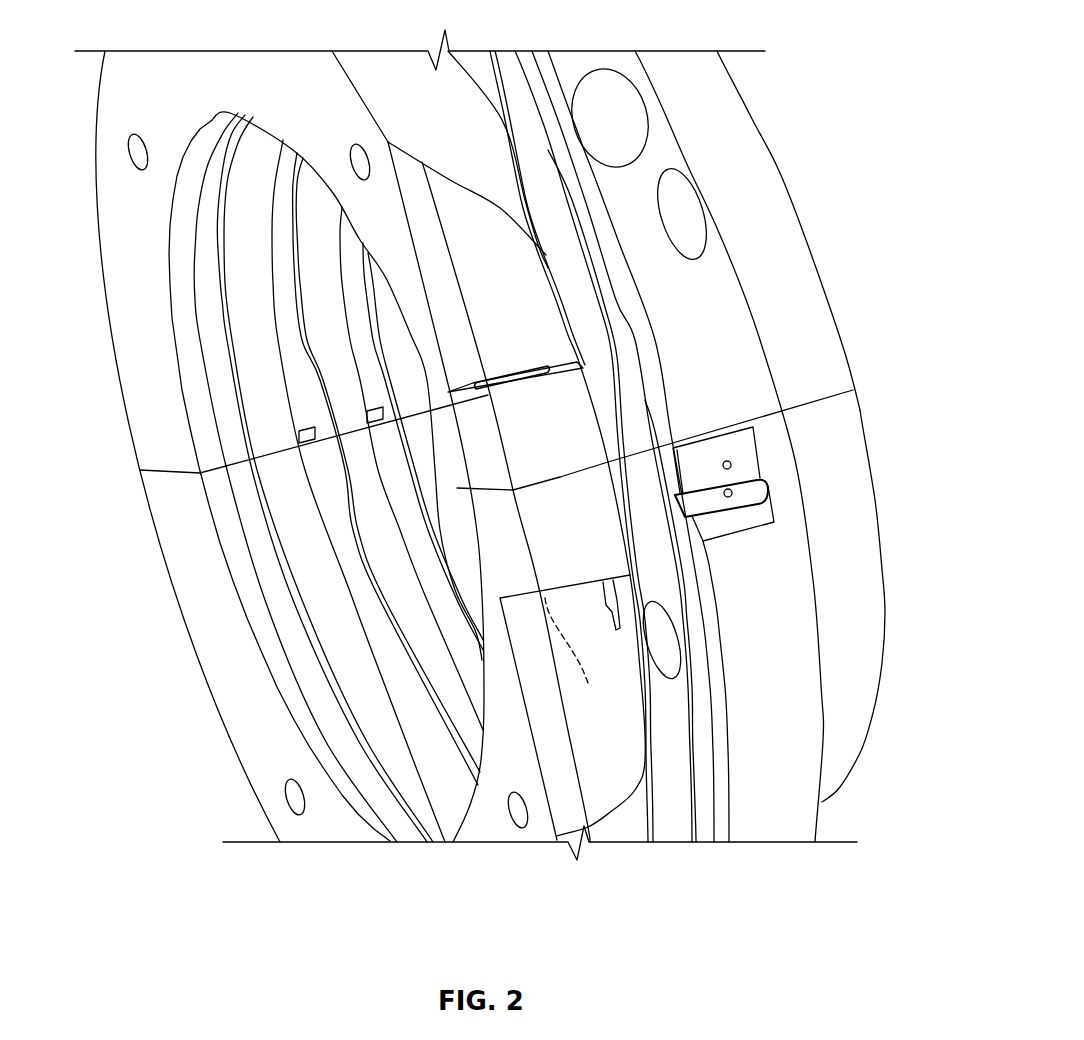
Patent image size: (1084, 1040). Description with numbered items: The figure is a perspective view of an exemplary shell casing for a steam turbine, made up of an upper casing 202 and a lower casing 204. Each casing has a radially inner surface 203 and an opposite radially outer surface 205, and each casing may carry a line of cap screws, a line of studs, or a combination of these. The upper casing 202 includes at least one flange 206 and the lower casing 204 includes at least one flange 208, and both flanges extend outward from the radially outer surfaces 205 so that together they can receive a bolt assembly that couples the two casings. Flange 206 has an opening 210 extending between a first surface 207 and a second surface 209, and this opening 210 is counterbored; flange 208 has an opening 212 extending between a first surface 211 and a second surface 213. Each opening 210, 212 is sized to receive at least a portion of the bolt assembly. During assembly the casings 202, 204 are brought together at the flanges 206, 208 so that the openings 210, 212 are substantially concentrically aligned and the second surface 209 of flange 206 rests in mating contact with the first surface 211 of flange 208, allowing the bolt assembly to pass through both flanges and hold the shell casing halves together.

The upper casing 202 is at (835, 255).
The radially inner surface 203 is at (311, 501).
The lower casing 204 is at (878, 417).
The radially outer surface 205 is at (827, 367).
The flange 206 is at (557, 454).
The first surface 207 is at (533, 370).
The flange 208 is at (581, 534).
The second surface 209 is at (590, 466).
The opening 210 is at (550, 362).
The first surface 211 is at (567, 478).
The opening 212 is at (578, 655).
The second surface 213 is at (610, 582).